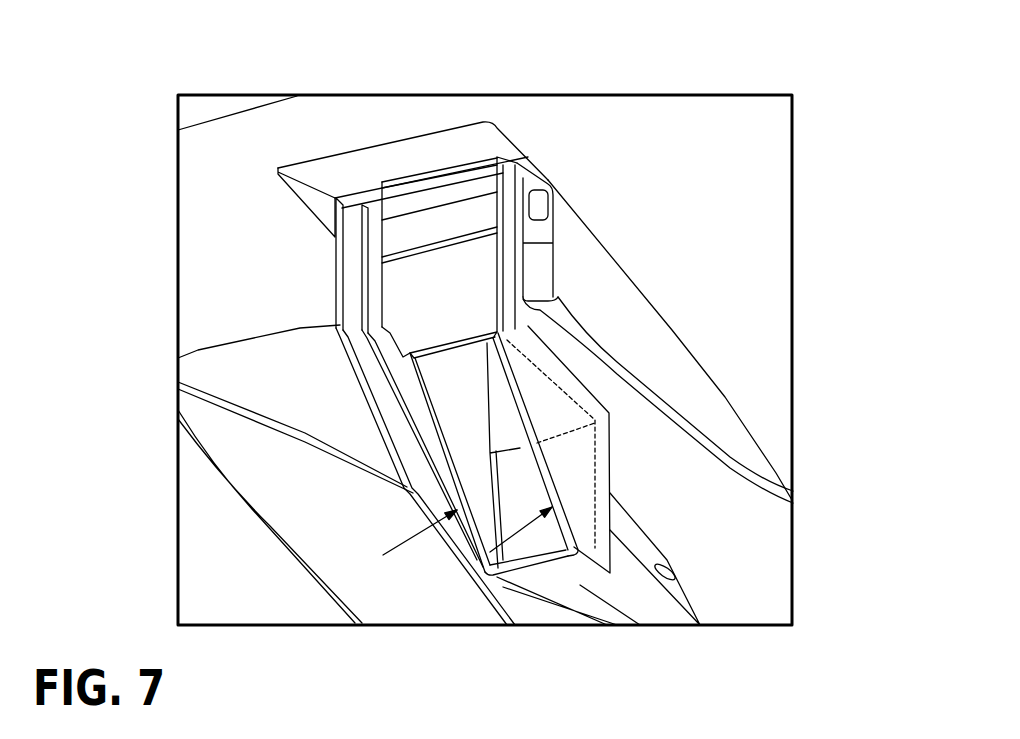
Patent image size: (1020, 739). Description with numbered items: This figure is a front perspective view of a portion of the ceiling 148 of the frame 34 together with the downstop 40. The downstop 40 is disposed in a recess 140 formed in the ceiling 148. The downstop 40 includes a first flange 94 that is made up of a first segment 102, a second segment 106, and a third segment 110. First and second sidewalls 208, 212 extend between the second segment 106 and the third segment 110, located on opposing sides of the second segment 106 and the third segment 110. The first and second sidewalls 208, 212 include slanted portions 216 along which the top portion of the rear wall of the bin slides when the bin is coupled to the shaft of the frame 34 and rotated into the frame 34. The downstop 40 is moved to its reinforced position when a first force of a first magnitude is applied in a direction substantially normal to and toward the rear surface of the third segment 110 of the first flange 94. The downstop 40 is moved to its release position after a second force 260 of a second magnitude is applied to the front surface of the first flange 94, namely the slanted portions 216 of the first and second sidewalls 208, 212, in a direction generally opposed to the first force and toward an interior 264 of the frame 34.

The frame 34 is at (760, 140).
The downstop 40 is at (413, 297).
The first flange 94 is at (477, 250).
The first segment 102 is at (503, 257).
The second segment 106 is at (560, 373).
The third segment 110 is at (603, 493).
The recess 140 is at (622, 420).
The ceiling 148 is at (693, 137).
The first sidewall 208 is at (400, 383).
The second sidewall 212 is at (500, 363).
The slanted portions 216 is at (433, 437).
The second force 260 is at (413, 537).
The interior 264 is at (720, 537).